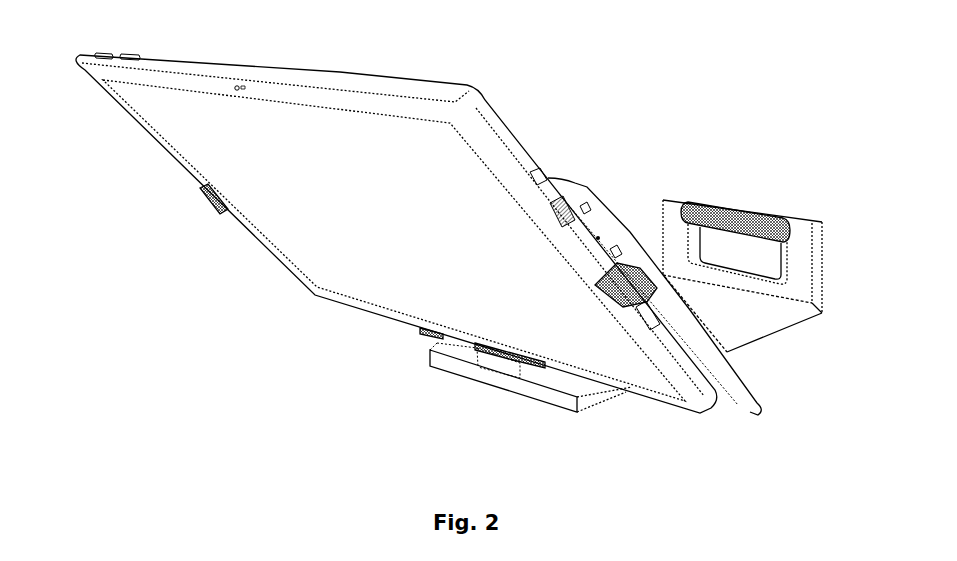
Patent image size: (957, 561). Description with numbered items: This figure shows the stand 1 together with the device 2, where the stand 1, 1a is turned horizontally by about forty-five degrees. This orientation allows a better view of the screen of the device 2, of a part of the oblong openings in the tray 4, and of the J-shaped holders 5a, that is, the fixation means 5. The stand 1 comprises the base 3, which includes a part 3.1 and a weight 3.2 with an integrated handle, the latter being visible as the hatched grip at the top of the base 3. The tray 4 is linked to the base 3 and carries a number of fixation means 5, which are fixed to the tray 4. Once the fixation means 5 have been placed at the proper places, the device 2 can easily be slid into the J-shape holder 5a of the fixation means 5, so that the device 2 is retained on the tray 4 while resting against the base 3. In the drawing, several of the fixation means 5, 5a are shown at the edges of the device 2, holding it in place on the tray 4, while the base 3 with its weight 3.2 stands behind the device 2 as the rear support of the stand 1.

The stand 1 is at (521, 270).
The stand 1a is at (521, 270).
The device 2 is at (95, 77).
The base 3 is at (756, 259).
The base part 3.1 is at (798, 317).
The weight 3.2 is at (805, 232).
The tray 4 is at (548, 178).
The fixation means 5 is at (433, 322).
The J-shape holder 5a is at (215, 187).